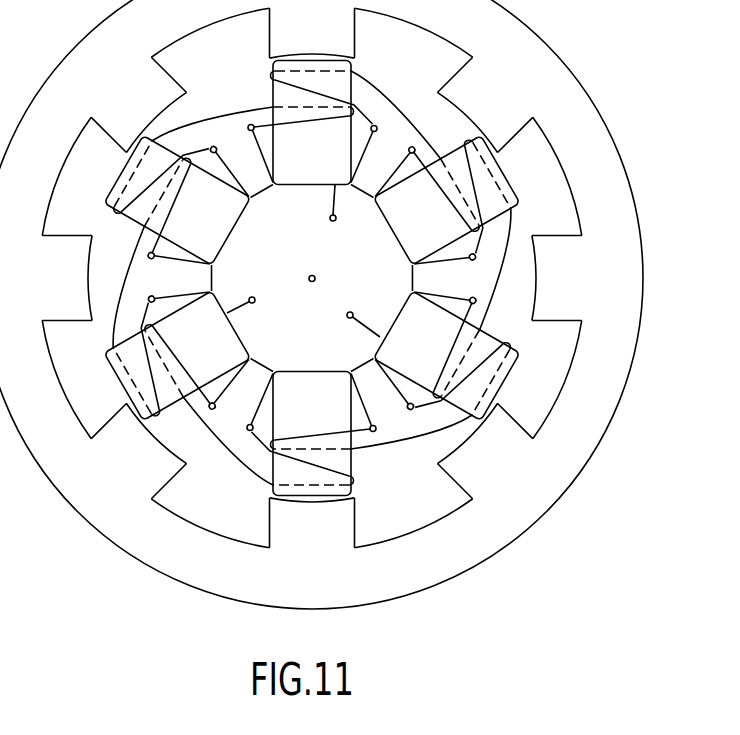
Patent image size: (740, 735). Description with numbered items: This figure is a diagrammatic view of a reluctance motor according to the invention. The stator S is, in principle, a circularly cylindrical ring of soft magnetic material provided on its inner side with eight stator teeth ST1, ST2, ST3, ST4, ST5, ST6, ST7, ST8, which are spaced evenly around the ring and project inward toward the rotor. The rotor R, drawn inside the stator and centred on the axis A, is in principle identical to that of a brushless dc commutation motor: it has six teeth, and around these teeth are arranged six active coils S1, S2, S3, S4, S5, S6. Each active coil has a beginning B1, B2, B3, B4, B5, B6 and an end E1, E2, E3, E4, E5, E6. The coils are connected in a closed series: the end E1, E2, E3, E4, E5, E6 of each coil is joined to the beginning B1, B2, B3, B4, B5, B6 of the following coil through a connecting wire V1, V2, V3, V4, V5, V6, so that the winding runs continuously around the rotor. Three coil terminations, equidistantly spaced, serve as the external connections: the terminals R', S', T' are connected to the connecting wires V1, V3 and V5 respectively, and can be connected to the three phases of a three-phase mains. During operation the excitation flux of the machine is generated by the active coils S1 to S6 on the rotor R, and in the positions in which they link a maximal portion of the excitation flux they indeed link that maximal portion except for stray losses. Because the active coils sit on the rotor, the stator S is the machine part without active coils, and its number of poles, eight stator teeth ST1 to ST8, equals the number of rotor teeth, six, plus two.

The stator S is at (321, 304).
The stator tooth ST1 is at (340, 27).
The stator tooth ST2 is at (470, 85).
The stator tooth ST3 is at (557, 253).
The stator tooth ST4 is at (507, 440).
The stator tooth ST5 is at (340, 534).
The stator tooth ST6 is at (107, 440).
The stator tooth ST7 is at (62, 253).
The stator tooth ST8 is at (158, 93).
The connecting wire V1 is at (318, 185).
The connecting wire V2 is at (392, 233).
The connecting wire V3 is at (402, 312).
The connecting wire V4 is at (318, 372).
The connecting wire V5 is at (243, 323).
The connecting wire V6 is at (233, 230).
The coil beginning B1 is at (216, 148).
The coil beginning B2 is at (377, 129).
The coil beginning B3 is at (473, 260).
The coil beginning B4 is at (409, 409).
The coil beginning B5 is at (247, 427).
The coil beginning B6 is at (150, 296).
The coil end E1 is at (250, 125).
The coil end E2 is at (415, 148).
The coil end E3 is at (476, 302).
The coil end E4 is at (373, 432).
The coil end E5 is at (209, 408).
The coil end E6 is at (148, 254).
The active coil S1 is at (212, 121).
The active coil S2 is at (402, 113).
The active coil S3 is at (500, 262).
The active coil S4 is at (425, 433).
The active coil S5 is at (223, 446).
The active coil S6 is at (122, 295).
The terminal R' is at (324, 218).
The terminal S' is at (354, 311).
The terminal T' is at (252, 296).
The rotor axis A is at (315, 276).
The rotor R is at (406, 308).